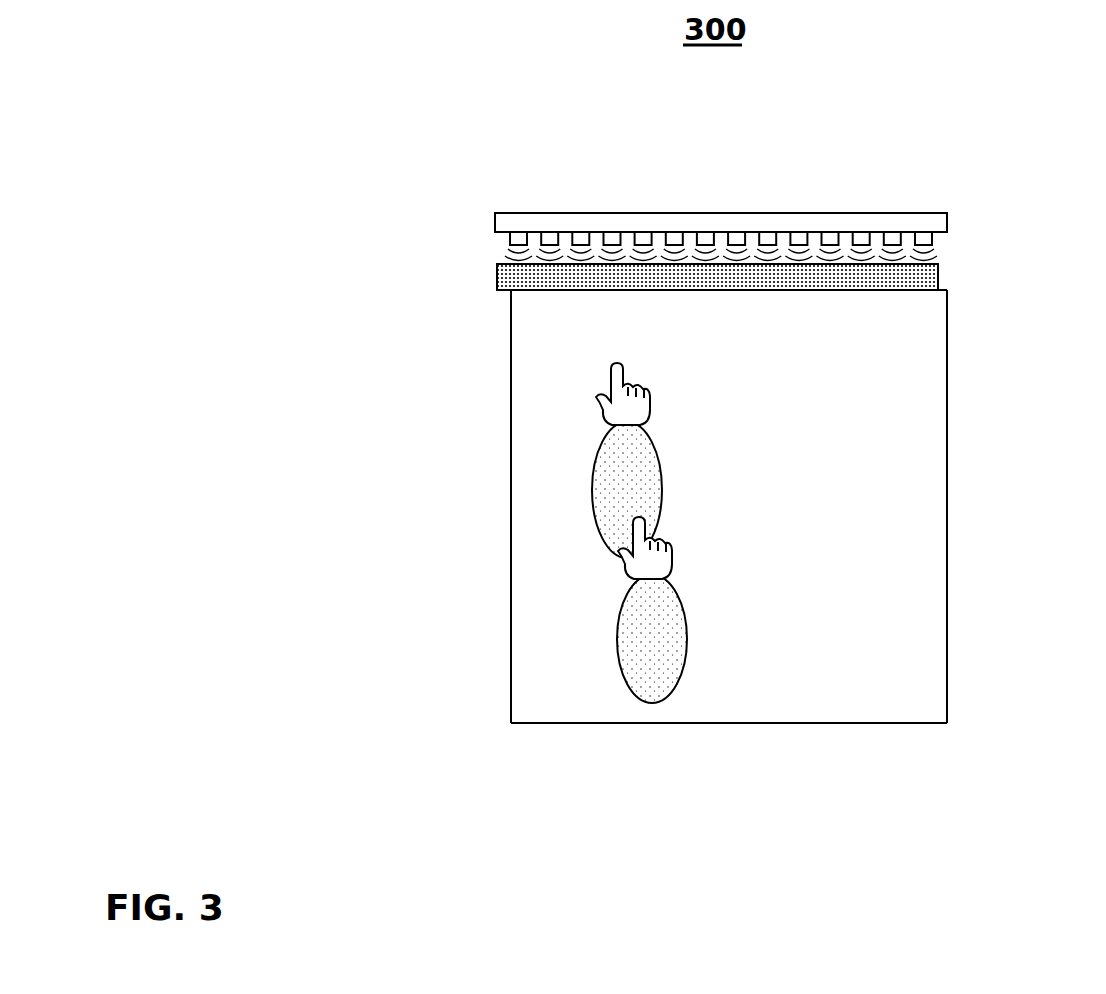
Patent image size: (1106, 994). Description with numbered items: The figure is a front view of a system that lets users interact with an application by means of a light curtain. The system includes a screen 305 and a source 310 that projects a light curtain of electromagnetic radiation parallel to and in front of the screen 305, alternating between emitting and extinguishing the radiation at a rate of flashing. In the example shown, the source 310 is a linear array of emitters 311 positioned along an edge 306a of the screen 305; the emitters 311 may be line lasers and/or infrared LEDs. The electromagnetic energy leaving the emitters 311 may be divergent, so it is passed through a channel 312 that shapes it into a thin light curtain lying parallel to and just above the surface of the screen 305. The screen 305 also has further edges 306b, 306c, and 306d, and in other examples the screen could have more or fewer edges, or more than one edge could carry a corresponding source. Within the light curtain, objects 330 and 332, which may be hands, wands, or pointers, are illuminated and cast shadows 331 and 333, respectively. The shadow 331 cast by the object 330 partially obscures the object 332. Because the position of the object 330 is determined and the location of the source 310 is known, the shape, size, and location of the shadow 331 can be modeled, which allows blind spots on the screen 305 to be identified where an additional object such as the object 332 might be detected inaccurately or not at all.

The screen 305 is at (717, 544).
The edge of the screen 306a is at (900, 298).
The edge of the screen 306b is at (938, 455).
The edge of the screen 306c is at (725, 733).
The edge of the screen 306d is at (500, 465).
The source 310 is at (1004, 215).
The emitters 311 is at (513, 238).
The channel 312 is at (512, 283).
The object 330 is at (636, 405).
The shadow 331 is at (636, 485).
The object 332 is at (658, 560).
The shadow 333 is at (667, 635).